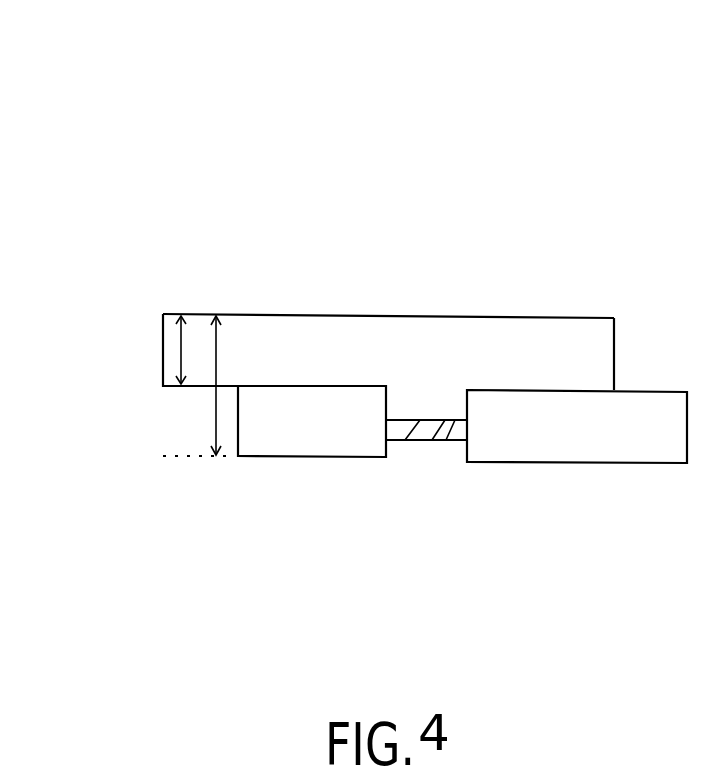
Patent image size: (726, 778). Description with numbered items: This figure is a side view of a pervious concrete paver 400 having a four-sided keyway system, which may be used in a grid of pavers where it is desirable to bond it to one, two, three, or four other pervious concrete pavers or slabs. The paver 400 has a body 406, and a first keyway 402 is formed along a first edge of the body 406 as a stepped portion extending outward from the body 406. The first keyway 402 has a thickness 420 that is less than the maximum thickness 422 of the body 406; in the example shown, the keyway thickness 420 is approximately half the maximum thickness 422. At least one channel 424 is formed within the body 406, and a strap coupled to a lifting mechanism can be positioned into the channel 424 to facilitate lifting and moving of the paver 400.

The paver 400 is at (77, 138).
The first keyway 402 is at (198, 340).
The body 406 is at (540, 364).
The thickness 420 is at (179, 351).
The maximum thickness 422 is at (217, 353).
The channel 424 is at (439, 462).